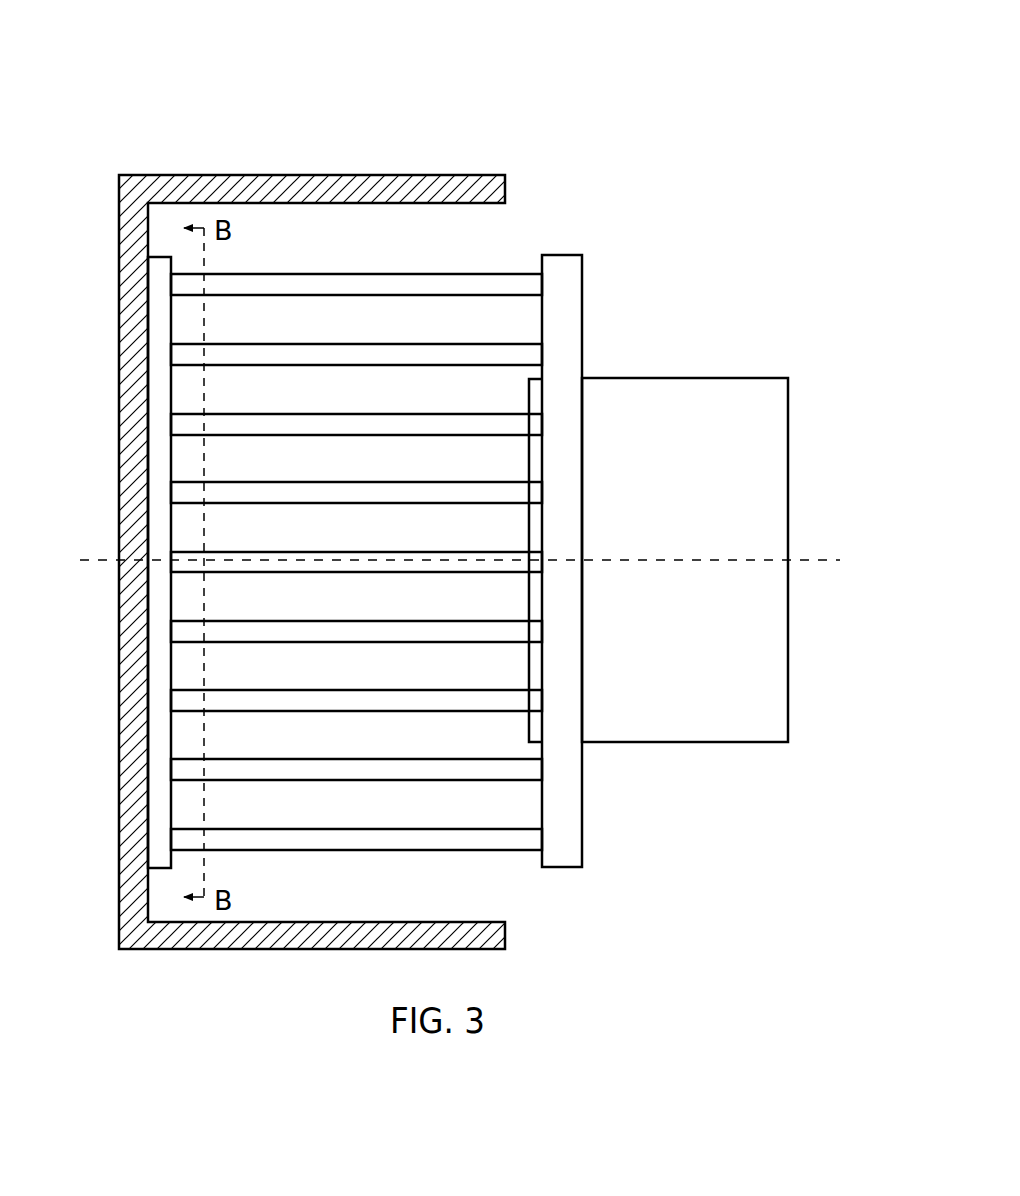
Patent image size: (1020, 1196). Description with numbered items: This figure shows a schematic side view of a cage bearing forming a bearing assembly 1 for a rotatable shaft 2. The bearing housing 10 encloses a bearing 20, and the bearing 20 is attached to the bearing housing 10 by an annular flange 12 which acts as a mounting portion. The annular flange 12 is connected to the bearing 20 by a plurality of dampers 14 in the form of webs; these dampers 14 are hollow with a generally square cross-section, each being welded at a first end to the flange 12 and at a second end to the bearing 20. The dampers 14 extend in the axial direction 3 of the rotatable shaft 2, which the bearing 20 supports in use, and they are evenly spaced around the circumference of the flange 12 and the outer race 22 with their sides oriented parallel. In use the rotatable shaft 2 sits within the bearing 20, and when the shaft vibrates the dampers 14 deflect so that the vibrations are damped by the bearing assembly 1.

The bearing assembly 1 is at (732, 39).
The rotatable shaft 2 is at (690, 400).
The axial direction 3 is at (836, 560).
The bearing housing 10 is at (435, 190).
The annular flange 12 is at (158, 272).
The dampers 14 is at (440, 352).
The bearing 20 is at (612, 544).
The outer race 22 is at (567, 317).